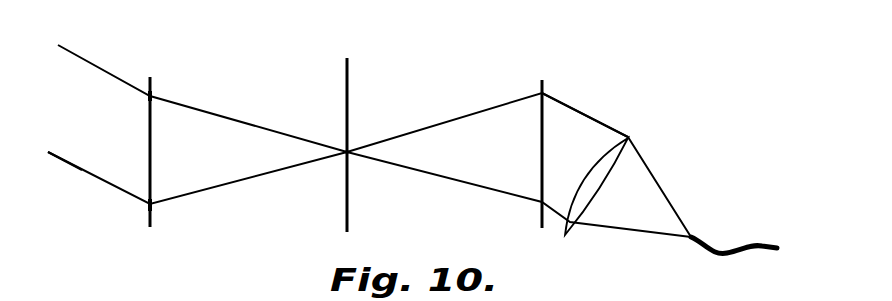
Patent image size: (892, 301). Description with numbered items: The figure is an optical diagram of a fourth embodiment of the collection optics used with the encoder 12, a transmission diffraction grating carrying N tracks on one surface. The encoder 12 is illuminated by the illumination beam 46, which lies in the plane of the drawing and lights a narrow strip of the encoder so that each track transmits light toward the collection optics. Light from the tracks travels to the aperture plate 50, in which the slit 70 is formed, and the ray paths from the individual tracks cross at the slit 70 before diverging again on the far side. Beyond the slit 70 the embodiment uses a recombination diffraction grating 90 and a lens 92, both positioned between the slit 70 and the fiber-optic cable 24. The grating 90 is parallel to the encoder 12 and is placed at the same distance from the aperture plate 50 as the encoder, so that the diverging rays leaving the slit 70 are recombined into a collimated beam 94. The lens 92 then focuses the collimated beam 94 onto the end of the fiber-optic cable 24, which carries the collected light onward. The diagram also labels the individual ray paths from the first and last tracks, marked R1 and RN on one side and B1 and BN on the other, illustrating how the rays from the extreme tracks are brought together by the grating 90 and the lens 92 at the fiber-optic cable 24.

The encoder 12 is at (143, 83).
The illumination beam 46 is at (83, 170).
The aperture plate 50 is at (347, 78).
The slit 70 is at (350, 148).
The recombination diffraction grating 90 is at (542, 88).
The lens 92 is at (613, 150).
The collimated beam 94 is at (573, 112).
The fiber-optic cable 24 is at (728, 248).
The first ray R1 is at (202, 98).
The Nth ray RN is at (519, 165).
The first beam B1 is at (519, 208).
The Nth beam BN is at (197, 182).